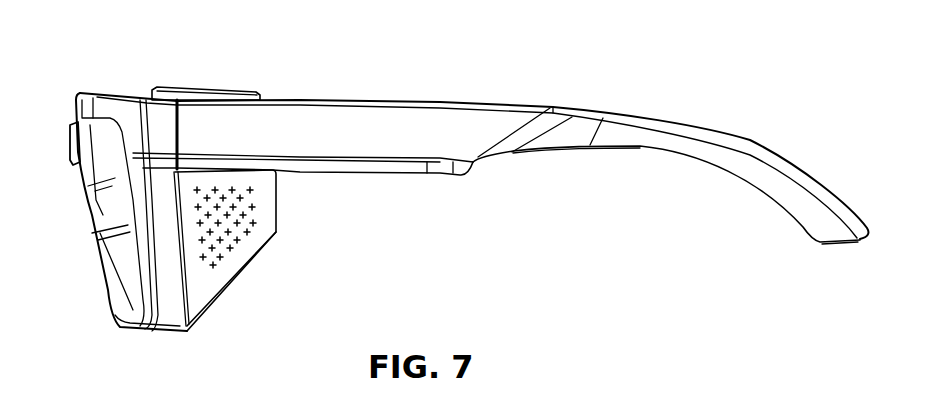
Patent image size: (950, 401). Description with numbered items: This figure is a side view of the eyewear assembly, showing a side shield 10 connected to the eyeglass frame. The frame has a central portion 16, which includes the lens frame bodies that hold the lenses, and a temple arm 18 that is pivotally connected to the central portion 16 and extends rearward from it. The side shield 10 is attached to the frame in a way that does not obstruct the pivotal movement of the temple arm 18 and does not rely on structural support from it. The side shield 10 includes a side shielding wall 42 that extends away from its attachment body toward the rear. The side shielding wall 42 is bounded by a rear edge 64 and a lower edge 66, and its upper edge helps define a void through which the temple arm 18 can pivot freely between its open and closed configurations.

The side shield 10 is at (215, 85).
The central portion 16 is at (85, 85).
The temple arm 18 is at (400, 118).
The side shielding wall 42 is at (247, 253).
The rear edge 64 is at (282, 197).
The lower edge 66 is at (215, 302).